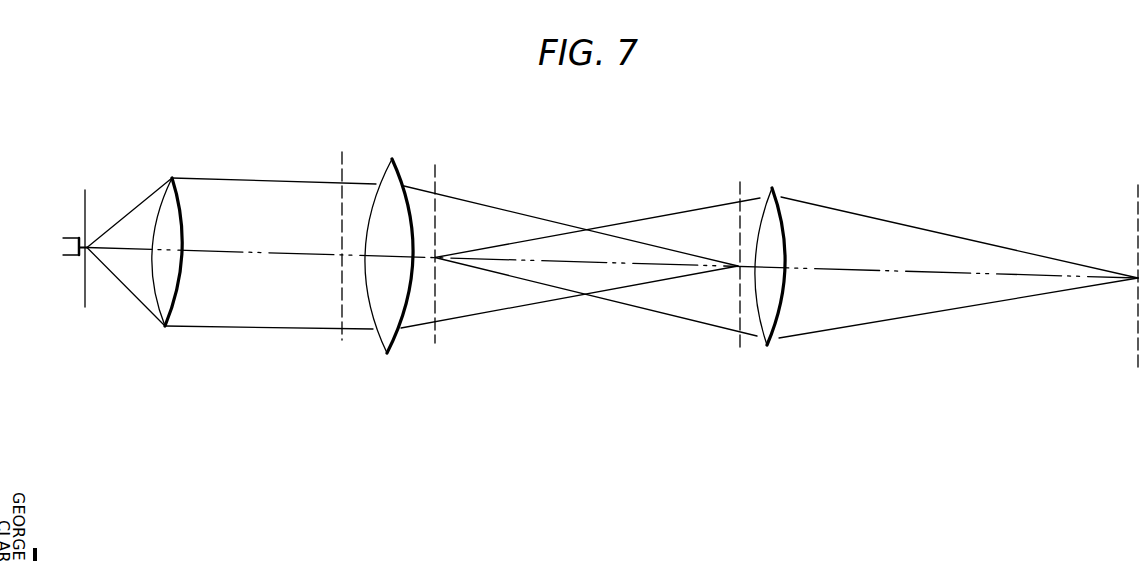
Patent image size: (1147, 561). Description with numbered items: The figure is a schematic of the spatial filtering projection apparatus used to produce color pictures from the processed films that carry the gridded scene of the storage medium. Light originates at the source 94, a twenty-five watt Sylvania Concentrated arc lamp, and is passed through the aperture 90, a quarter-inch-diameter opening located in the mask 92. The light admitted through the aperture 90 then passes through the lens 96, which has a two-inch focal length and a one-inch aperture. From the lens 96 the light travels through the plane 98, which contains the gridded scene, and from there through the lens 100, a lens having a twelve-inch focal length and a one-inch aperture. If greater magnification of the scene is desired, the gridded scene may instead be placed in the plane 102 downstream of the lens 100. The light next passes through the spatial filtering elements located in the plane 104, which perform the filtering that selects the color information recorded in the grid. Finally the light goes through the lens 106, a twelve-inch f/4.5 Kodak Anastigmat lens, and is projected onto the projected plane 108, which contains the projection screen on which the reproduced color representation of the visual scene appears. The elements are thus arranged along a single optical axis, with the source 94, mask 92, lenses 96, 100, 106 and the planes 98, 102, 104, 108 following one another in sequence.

The aperture 90 is at (91, 245).
The mask 92 is at (83, 280).
The source 94 is at (67, 238).
The lens 96 is at (172, 178).
The plane 98 is at (338, 175).
The lens 100 is at (392, 160).
The plane 102 is at (438, 173).
The plane 104 is at (740, 192).
The lens 106 is at (773, 190).
The projected plane 108 is at (1138, 200).